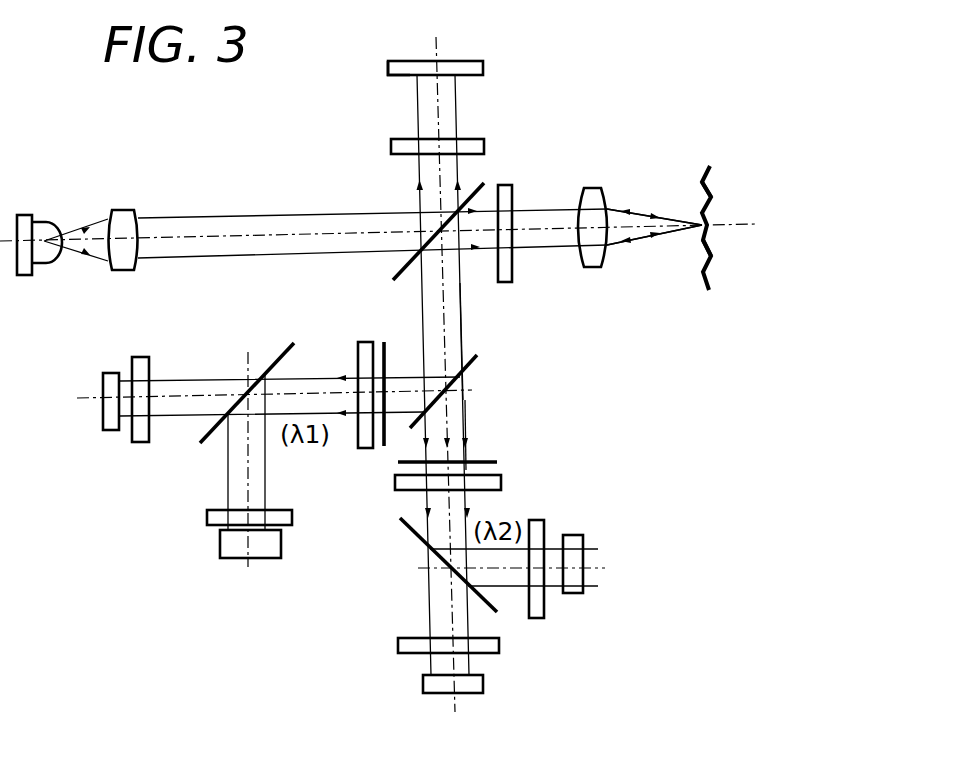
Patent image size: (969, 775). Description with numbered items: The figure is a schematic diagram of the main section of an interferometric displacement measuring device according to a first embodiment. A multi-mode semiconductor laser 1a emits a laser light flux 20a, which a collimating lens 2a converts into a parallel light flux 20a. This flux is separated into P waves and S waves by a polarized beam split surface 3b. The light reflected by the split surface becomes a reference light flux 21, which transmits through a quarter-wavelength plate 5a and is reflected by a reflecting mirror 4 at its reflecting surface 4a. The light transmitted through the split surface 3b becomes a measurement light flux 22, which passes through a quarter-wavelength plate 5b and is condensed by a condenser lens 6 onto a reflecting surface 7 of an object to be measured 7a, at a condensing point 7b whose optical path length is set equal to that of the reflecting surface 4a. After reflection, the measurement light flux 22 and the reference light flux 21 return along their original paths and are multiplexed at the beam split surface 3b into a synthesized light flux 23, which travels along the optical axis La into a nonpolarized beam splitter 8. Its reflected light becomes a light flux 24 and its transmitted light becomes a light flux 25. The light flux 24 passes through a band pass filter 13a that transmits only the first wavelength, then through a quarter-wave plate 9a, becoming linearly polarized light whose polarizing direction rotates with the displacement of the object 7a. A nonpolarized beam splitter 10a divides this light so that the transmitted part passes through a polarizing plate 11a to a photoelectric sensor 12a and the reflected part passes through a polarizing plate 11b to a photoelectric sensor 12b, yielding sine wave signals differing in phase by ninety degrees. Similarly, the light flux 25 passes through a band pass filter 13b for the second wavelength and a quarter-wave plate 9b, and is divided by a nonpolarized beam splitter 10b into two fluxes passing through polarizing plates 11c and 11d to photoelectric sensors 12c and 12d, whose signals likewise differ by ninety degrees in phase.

The multi-mode semiconductor laser 1a is at (25, 213).
The collimating lens 2a is at (120, 210).
The optical axis La is at (173, 228).
The laser light flux 20a is at (229, 217).
The polarized beam split surface 3b is at (393, 268).
The reflecting mirror 4 is at (414, 60).
The reflecting surface 4a is at (396, 76).
The ¼λ wavelength plate 5a is at (486, 142).
The ¼λ wavelength plate 5b is at (510, 255).
The condenser lens 6 is at (590, 190).
The reflecting surface 7 is at (702, 175).
The object to be measured 7a is at (714, 180).
The condensing point 7b is at (702, 268).
The nonpolarized beam splitter 8 is at (478, 360).
The ¼λ plate 9a is at (360, 452).
The ¼λ plate 9b is at (500, 480).
The nonpolarized beam splitter 10a is at (268, 366).
The nonpolarized beam splitter 10b is at (402, 530).
The polarizing plate 11a is at (140, 356).
The polarizing plate 11b is at (207, 518).
The polarizing plate 11c is at (398, 645).
The polarizing plate 11d is at (545, 618).
The photoelectric sensor 12a is at (108, 416).
The photoelectric sensor 12b is at (238, 558).
The photoelectric sensor 12c is at (423, 685).
The photoelectric sensor 12d is at (583, 545).
The band pass filter 13a is at (386, 450).
The band pass filter 13b is at (500, 460).
The reference light flux 21 is at (457, 98).
The measurement light flux 22 is at (483, 210).
The synthesized light flux 23 is at (459, 318).
The light flux 24 is at (320, 383).
The light flux 25 is at (465, 415).